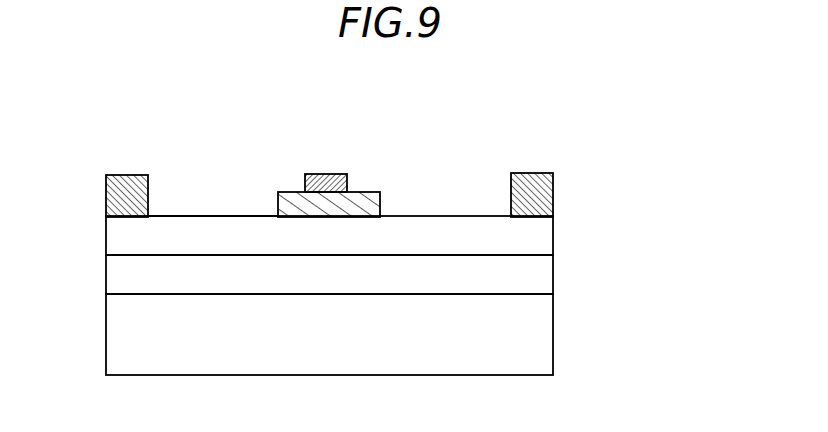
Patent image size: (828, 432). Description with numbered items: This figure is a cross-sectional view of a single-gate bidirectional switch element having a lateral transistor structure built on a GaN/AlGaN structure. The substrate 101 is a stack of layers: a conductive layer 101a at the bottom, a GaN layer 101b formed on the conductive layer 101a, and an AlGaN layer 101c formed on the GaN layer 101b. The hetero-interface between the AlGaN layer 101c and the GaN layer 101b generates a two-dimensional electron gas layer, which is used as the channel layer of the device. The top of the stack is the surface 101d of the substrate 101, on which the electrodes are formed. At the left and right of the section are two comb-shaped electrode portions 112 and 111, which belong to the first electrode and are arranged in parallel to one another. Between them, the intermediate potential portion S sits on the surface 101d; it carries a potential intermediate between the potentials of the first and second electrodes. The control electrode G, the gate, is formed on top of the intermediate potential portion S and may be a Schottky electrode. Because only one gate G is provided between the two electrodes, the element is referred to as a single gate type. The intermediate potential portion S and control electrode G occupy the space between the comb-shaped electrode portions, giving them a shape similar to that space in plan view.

The substrate 101 is at (640, 230).
The conductive layer 101a is at (543, 318).
The GaN layer 101b is at (543, 271).
The AlGaN layer 101c is at (543, 233).
The surface of the substrate 101d is at (207, 216).
The electrode portion 112 is at (128, 175).
The electrode portion 111 is at (530, 173).
The control electrode G is at (322, 173).
The intermediate potential portion S is at (370, 192).